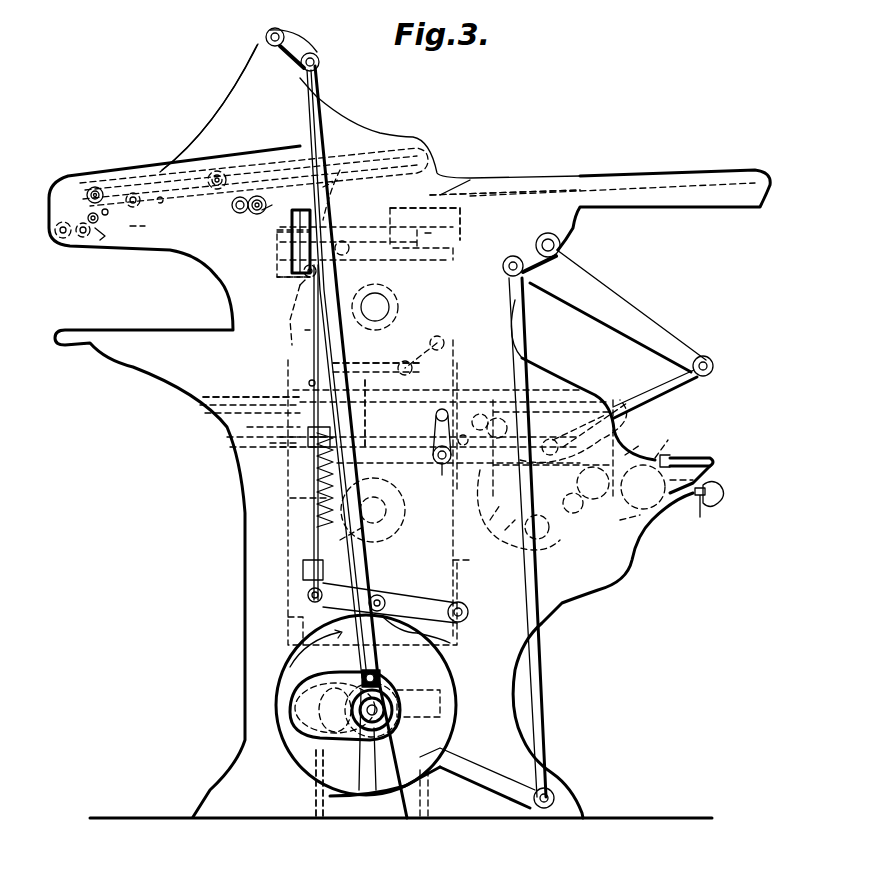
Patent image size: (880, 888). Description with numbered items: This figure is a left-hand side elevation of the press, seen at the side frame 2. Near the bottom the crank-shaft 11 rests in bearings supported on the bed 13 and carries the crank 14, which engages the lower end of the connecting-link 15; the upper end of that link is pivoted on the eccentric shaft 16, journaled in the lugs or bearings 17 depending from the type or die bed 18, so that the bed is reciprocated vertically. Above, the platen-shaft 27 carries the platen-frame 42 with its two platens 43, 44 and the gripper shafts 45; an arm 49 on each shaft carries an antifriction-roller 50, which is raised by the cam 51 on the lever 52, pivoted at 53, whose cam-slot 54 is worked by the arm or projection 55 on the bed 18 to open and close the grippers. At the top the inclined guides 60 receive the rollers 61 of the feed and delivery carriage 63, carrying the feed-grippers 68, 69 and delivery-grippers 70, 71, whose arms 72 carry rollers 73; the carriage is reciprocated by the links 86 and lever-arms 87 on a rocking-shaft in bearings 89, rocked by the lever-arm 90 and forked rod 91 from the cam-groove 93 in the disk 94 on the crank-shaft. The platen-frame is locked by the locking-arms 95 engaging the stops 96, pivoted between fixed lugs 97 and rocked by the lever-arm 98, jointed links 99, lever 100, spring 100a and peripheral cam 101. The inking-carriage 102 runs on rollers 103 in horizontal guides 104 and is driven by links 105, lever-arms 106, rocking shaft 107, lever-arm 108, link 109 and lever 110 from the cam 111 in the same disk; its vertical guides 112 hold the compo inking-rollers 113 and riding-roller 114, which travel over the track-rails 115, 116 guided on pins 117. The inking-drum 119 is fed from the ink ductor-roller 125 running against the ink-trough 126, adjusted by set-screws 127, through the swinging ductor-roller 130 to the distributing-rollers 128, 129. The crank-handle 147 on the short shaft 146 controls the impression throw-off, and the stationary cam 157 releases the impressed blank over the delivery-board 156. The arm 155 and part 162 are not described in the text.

The side frame 2 is at (505, 413).
The crank-shaft 11 is at (362, 710).
The bed 13 is at (317, 783).
The crank 14 is at (410, 707).
The connecting-link 15 is at (470, 563).
The shaft 16 is at (400, 520).
The lugs or bearings 17 is at (300, 520).
The type or die bed 18 is at (270, 443).
The platen-shaft 27 is at (375, 307).
The platen-frame 42 is at (290, 291).
The platen 43 is at (447, 205).
The platen 44 is at (205, 399).
The shaft 45 is at (345, 242).
The arm 49 is at (320, 268).
The antifriction-roller 50 is at (292, 270).
The cam 51 is at (300, 286).
The lever 52 is at (305, 330).
The pivot 53 is at (308, 383).
The cam-slot 54 is at (305, 465).
The arm or projection 55 is at (305, 455).
The inclined guides 60 is at (388, 143).
The rollers 61 is at (95, 186).
The feed and delivery carriage 63 is at (135, 191).
The feed-gripper 68 is at (262, 196).
The feed-gripper 69 is at (263, 211).
The delivery-gripper 70 is at (140, 233).
The delivery-gripper 71 is at (100, 236).
The arm 72 is at (85, 214).
The antifriction-roller 73 is at (105, 209).
The links 86 is at (160, 197).
The lever-arms 87 is at (283, 80).
The bearings 89 is at (266, 37).
The lever-arm 90 is at (311, 52).
The forked rod 91 is at (318, 87).
The cam-groove 93 is at (303, 688).
The disk 94 is at (382, 676).
The locking-arms 95 is at (340, 170).
The lugs or stops 96 is at (393, 247).
The fixed lugs 97 is at (280, 250).
The lever-arm 98 is at (292, 222).
The jointed links 99 is at (303, 563).
The lever 100 is at (415, 607).
The spring 100a is at (290, 498).
The cam 101 is at (413, 638).
The inking-carriage 102 is at (580, 405).
The rollers 103 is at (563, 420).
The horizontal guides 104 is at (247, 427).
The links 105 is at (668, 385).
The lever-arms 106 is at (620, 294).
The rocking shaft 107 is at (562, 245).
The lever-arm 108 is at (515, 256).
The link 109 is at (526, 337).
The lever 110 is at (470, 766).
The cam 111 is at (307, 707).
The open bearings or vertical guides 112 is at (495, 400).
The compo inking-rollers 113 is at (557, 423).
The riding-roller 114 is at (490, 492).
The track-rails 115 is at (365, 423).
The track-rails 116 is at (505, 535).
The pins 117 is at (492, 518).
The inking-drum 119 is at (612, 479).
The ink ductor-roller 125 is at (660, 458).
The ink-trough 126 is at (682, 458).
The set-screws 127 is at (703, 507).
The distributing-rollers 128 is at (565, 535).
The distributing-roller 129 is at (632, 533).
The swinging ductor-roller 130 is at (630, 452).
The short shaft 146 is at (440, 467).
The crank-handle 147 is at (436, 428).
The arm 155 is at (655, 178).
The delivery-board 156 is at (75, 330).
The stationary cam or projection 157 is at (88, 238).
The lever 162 is at (355, 535).